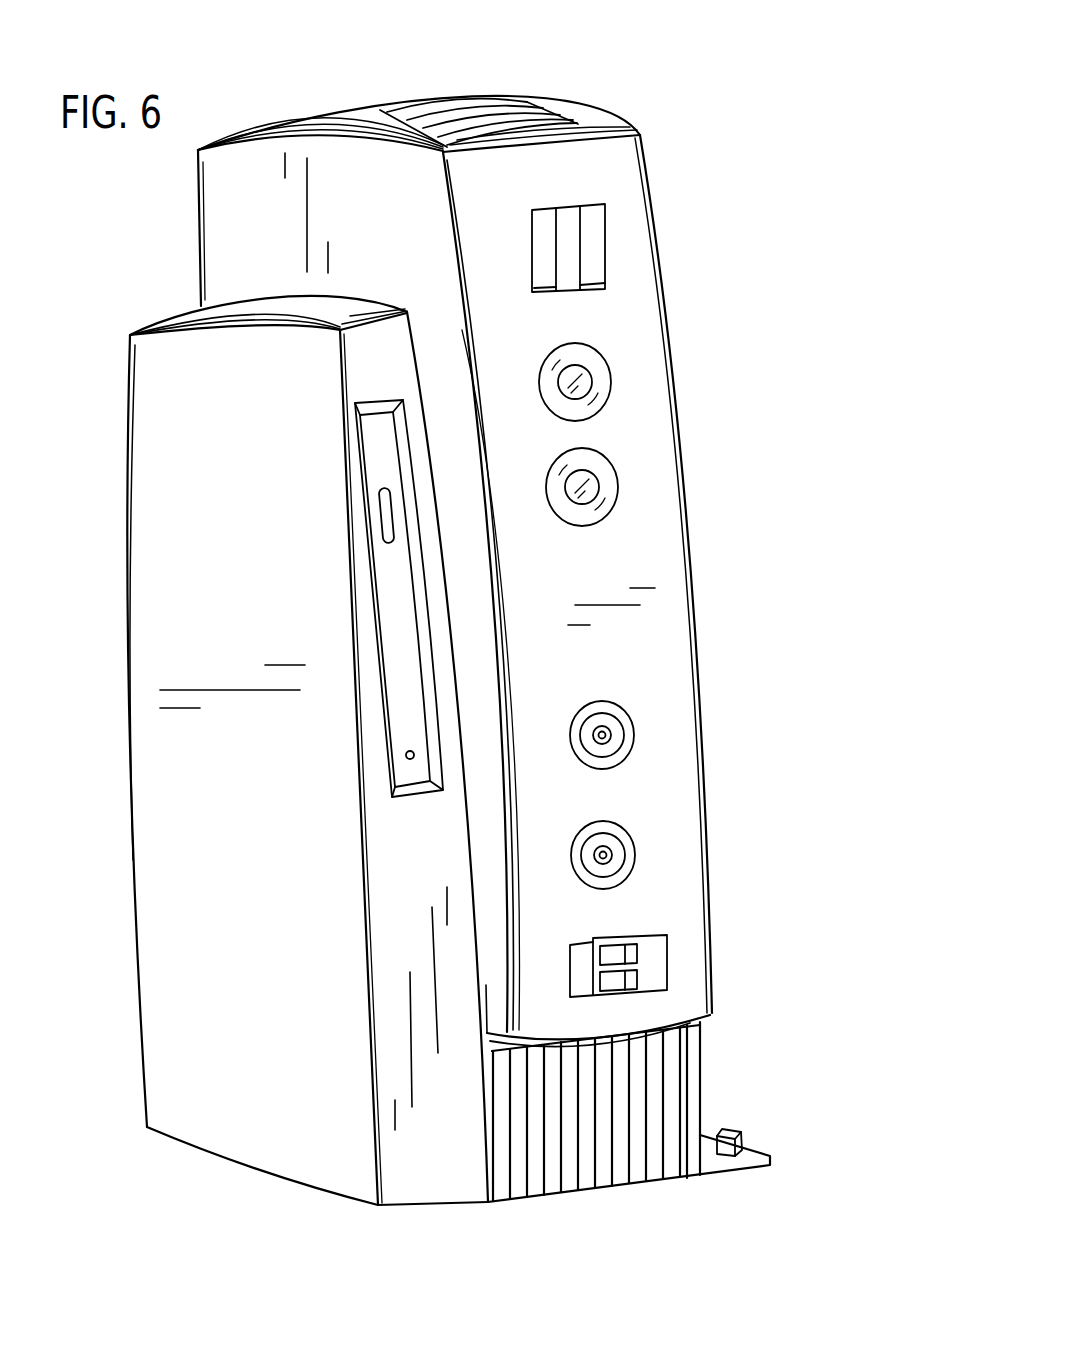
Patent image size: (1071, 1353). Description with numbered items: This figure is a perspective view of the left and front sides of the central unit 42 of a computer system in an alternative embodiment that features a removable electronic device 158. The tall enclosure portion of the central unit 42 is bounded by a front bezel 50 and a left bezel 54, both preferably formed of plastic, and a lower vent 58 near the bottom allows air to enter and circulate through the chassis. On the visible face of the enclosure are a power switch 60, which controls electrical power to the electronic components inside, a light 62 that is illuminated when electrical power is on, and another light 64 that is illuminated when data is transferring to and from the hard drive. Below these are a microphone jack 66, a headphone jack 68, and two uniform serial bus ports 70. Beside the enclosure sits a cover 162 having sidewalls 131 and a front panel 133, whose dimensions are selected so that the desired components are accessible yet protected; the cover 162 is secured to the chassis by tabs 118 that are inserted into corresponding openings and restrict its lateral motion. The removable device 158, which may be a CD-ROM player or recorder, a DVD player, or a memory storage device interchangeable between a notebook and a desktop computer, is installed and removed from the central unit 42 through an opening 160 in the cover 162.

The central unit 42 is at (428, 64).
The front bezel 50 is at (628, 163).
The left bezel 54 is at (256, 130).
The lower vent 58 is at (597, 1182).
The power switch 60 is at (567, 250).
The light 62 is at (590, 372).
The light 64 is at (590, 478).
The microphone jack 66 is at (615, 725).
The headphone jack 68 is at (617, 848).
The uniform serial bus (USB) ports 70 is at (637, 977).
The tabs 118 is at (722, 1132).
The sidewalls 131 is at (425, 1182).
The front panel 133 is at (242, 1145).
The removable electronic device 158 is at (373, 448).
The opening 160 is at (383, 722).
The cover 162 is at (160, 481).